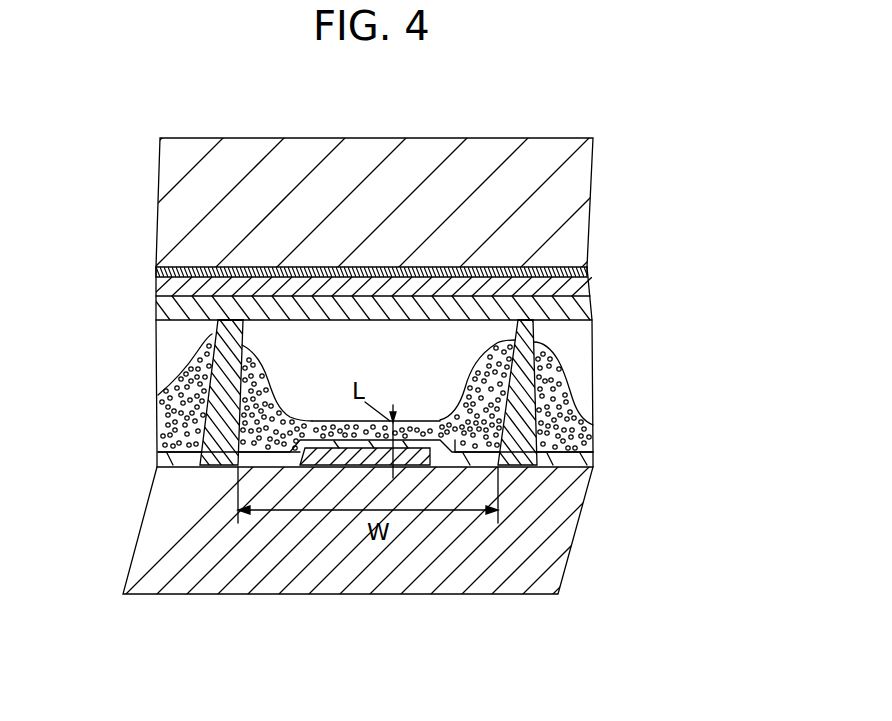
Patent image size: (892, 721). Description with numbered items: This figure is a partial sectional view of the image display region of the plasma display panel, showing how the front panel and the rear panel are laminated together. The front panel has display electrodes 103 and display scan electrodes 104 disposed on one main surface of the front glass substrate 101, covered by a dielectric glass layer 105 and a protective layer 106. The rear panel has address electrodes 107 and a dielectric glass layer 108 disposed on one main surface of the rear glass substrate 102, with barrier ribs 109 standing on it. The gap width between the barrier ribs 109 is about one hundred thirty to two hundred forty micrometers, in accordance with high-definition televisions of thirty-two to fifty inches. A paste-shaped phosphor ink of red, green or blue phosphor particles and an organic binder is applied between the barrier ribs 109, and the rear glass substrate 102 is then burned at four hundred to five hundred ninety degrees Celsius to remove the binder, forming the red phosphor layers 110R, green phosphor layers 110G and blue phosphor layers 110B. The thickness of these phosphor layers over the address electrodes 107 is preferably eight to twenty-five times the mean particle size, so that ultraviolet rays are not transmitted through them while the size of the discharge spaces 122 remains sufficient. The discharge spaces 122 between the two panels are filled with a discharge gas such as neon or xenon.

The front glass substrate 101 is at (580, 198).
The rear glass substrate 102 is at (568, 528).
The display electrodes 103 is at (587, 273).
The display scan electrodes 104 is at (371, 272).
The dielectric glass layer 105 is at (587, 292).
The protective layer 106 is at (592, 312).
The address electrodes 107 is at (305, 462).
The dielectric glass layer 108 is at (280, 410).
The barrier ribs 109 is at (375, 208).
The red phosphor layers 110R is at (165, 400).
The green phosphor layers 110G is at (452, 428).
The blue phosphor layers 110B is at (582, 427).
The discharge spaces 122 is at (457, 367).